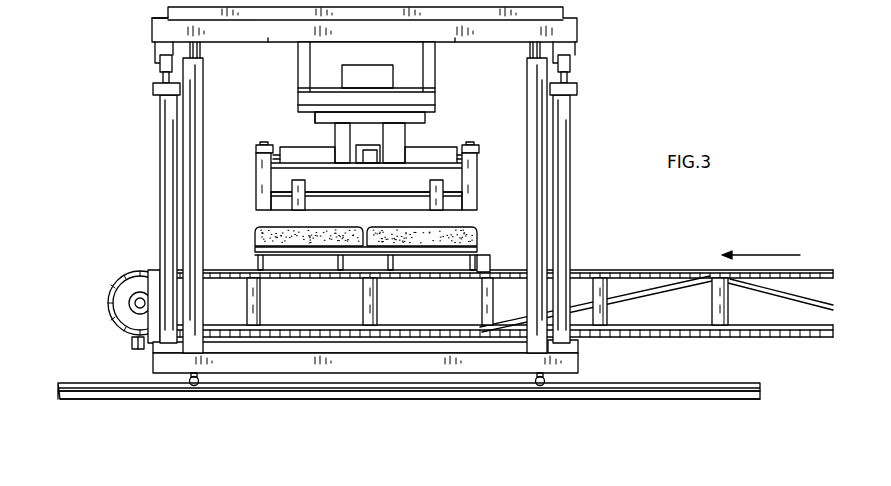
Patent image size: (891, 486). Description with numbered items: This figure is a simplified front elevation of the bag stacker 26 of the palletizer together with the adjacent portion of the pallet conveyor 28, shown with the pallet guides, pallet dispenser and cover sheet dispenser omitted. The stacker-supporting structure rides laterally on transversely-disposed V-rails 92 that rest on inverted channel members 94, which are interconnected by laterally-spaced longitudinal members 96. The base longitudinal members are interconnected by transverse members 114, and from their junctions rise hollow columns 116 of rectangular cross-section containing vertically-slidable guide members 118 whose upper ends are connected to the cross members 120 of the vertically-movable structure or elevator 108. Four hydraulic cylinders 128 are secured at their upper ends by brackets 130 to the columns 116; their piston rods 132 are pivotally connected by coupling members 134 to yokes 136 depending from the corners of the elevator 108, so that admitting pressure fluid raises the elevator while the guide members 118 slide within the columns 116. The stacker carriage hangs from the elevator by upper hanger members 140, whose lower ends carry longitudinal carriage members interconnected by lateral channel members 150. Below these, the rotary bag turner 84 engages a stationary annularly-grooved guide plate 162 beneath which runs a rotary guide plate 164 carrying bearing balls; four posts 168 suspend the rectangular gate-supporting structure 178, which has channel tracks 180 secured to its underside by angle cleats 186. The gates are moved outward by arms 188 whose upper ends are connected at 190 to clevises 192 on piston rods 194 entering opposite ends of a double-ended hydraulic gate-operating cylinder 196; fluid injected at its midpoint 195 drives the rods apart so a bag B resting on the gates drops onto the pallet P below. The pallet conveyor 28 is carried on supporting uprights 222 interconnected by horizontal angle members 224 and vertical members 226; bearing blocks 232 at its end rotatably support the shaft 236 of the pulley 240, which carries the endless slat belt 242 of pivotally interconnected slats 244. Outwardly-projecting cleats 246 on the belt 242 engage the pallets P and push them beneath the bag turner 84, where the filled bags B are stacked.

The bag stacker 26 is at (150, 21).
The endless-belt slat pallet conveyor 28 is at (663, 270).
The rotary bag turner 84 is at (255, 152).
The V-rails 92 is at (60, 383).
The inverted channel members 94 is at (76, 399).
The longitudinal members 96 is at (437, 398).
The vertically-movable structure 108 is at (577, 22).
The transverse members 114 is at (299, 377).
The hollow columns 116 is at (210, 100).
The guide members 118 is at (510, 48).
The cross members 120 is at (453, 38).
The hydraulic cylinders 128 is at (160, 162).
The brackets 130 is at (152, 89).
The piston rods 132 is at (157, 78).
The coupling members 134 is at (573, 63).
The yokes 136 is at (578, 50).
The upper hanger members 140 is at (298, 72).
The lateral channel members 150 is at (435, 98).
The stationary annularly-grooved circular guide plate 162 is at (348, 108).
The annularly-grooved rotary guide plate 164 is at (427, 119).
The posts 168 is at (316, 124).
The gate-supporting structure 178 is at (408, 182).
The channel tracks 180 is at (466, 205).
The angle cleats 186 is at (305, 186).
The arms 188 is at (256, 195).
The connection 190 is at (258, 155).
The clevises 192 is at (262, 147).
The piston rods 194 is at (455, 140).
The midpoint 195 is at (370, 143).
The double-ended hydraulic gate-operating cylinder 196 is at (316, 147).
The supporting uprights 222 is at (151, 372).
The horizontal angle members 224 is at (300, 280).
The vertical members 226 is at (712, 306).
The bearing blocks 232 is at (134, 301).
The shaft 236 is at (127, 303).
The pulley 240 is at (118, 319).
The endless slat belt 242 is at (141, 273).
The slats 244 is at (148, 270).
The cleats 246 is at (131, 347).
The filled bags B is at (258, 233).
The pallet P is at (256, 260).